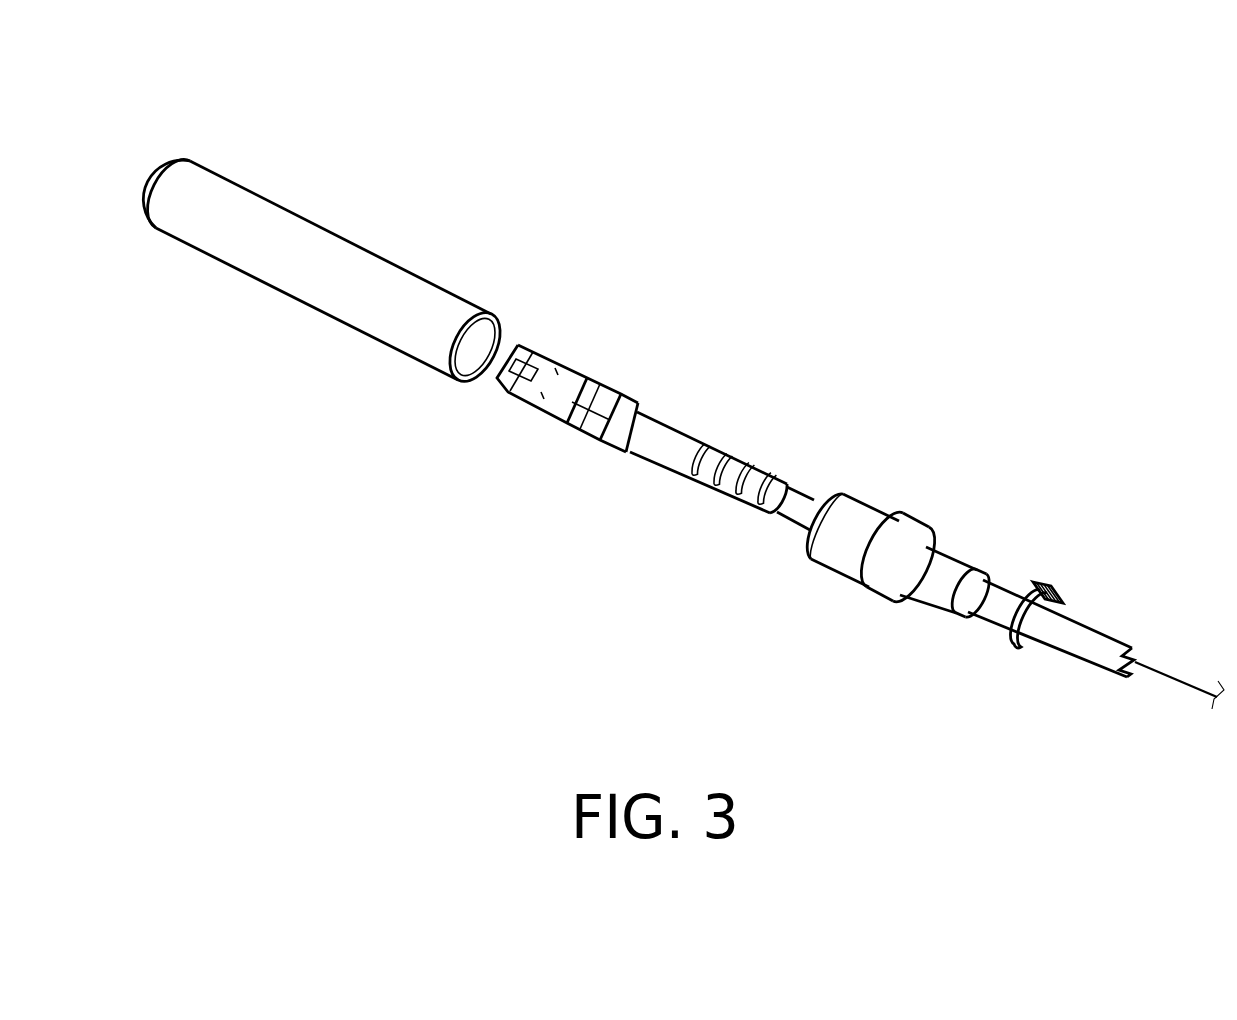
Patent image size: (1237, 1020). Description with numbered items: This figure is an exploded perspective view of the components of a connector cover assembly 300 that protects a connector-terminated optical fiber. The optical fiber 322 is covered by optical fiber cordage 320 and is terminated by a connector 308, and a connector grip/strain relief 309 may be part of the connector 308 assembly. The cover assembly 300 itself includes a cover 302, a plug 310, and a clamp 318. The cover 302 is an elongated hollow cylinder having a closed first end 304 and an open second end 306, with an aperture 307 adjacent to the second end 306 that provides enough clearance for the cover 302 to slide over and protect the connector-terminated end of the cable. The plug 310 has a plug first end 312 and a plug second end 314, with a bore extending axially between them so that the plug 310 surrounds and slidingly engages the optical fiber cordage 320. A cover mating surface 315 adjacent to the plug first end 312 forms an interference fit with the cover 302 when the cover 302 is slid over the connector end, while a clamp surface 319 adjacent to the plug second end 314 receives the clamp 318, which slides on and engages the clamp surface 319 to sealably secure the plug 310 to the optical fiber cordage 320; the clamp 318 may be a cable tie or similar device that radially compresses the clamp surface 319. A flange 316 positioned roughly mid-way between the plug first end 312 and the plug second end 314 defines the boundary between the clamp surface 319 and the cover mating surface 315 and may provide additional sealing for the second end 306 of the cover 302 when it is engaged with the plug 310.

The cover assembly 300 is at (598, 262).
The cover 302 is at (323, 263).
The closed first end 304 is at (128, 165).
The open second end 306 is at (478, 308).
The aperture 307 is at (472, 348).
The connector 308 is at (600, 380).
The connector grip/strain relief 309 is at (707, 445).
The plug 310 is at (902, 482).
The plug first end 312 is at (800, 533).
The plug second end 314 is at (973, 593).
The cover mating surface 315 is at (863, 550).
The flange 316 is at (915, 526).
The clamp 318 is at (1040, 580).
The clamp surface 319 is at (933, 572).
The optical fiber cordage 320 is at (1097, 650).
The optical fiber 322 is at (1146, 667).